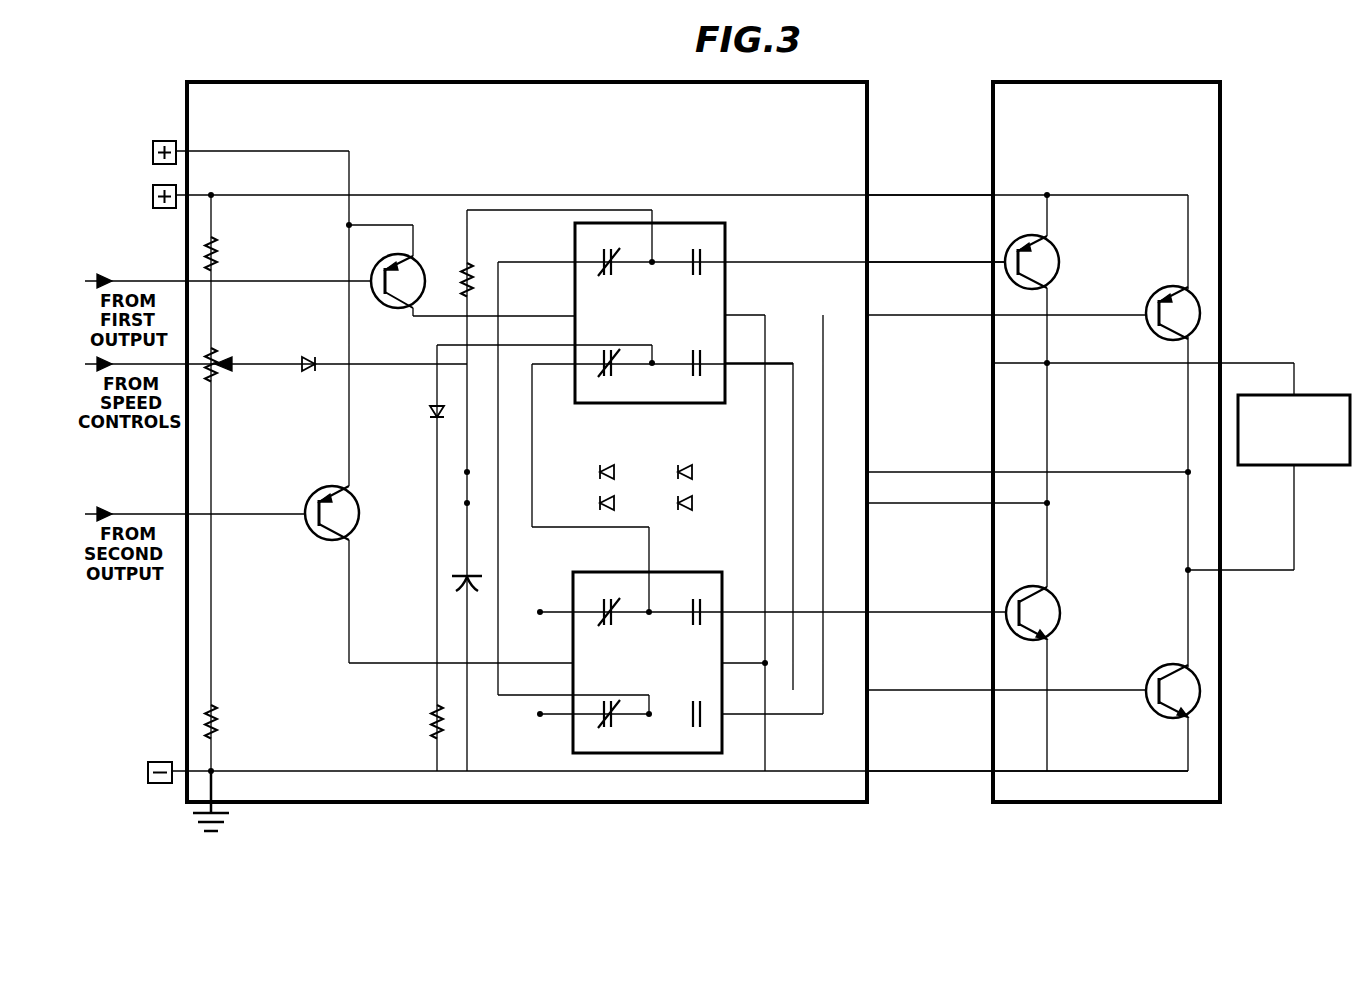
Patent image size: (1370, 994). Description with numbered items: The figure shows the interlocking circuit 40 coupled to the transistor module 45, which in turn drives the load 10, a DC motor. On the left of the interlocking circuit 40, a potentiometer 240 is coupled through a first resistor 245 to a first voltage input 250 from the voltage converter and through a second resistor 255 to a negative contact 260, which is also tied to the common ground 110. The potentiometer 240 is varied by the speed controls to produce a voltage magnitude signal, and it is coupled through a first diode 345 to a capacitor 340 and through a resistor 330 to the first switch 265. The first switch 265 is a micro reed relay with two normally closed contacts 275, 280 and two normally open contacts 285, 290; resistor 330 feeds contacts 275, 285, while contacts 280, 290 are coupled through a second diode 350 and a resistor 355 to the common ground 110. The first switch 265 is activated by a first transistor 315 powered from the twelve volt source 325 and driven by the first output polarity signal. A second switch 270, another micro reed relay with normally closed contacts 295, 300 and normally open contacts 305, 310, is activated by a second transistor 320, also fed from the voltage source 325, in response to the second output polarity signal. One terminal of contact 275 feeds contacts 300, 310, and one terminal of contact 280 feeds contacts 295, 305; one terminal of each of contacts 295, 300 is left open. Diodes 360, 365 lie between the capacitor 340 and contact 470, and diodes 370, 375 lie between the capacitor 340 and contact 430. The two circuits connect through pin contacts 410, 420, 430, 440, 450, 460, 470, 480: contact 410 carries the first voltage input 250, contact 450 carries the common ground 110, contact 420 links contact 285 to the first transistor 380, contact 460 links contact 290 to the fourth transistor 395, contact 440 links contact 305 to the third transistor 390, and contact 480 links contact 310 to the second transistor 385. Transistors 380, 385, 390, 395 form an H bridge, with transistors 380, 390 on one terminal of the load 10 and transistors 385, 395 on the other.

The load 10 is at (1300, 470).
The interlocking circuit 40 is at (846, 806).
The transistor module 45 is at (1212, 806).
The common ground 110 is at (218, 818).
The potentiometer 240 is at (216, 352).
The first resistor 245 is at (217, 248).
The first voltage input 250 is at (163, 210).
The second resistor 255 is at (216, 712).
The negative contact 260 is at (160, 760).
The first switch 265 is at (727, 240).
The second switch 270 is at (724, 730).
The normally closed contact 275 is at (613, 246).
The normally closed contact 280 is at (606, 378).
The normally open contact 285 is at (700, 246).
The normally open contact 290 is at (696, 378).
The normally closed contact 295 is at (600, 604).
The normally closed contact 300 is at (606, 735).
The normally open contact 305 is at (700, 604).
The normally open contact 310 is at (692, 735).
The first transistor 315 is at (405, 256).
The second transistor 320 is at (359, 496).
The +12 VDC voltage source 325 is at (163, 140).
The resistor 330 is at (472, 265).
The capacitor 340 is at (452, 583).
The first diode 345 is at (306, 372).
The second diode 350 is at (430, 414).
The resistor 355 is at (432, 722).
The diode 360 is at (610, 466).
The diode 365 is at (693, 455).
The diode 370 is at (610, 511).
The diode 375 is at (688, 511).
The first transistor of transistor module 380 is at (1058, 245).
The second transistor of transistor module 385 is at (1150, 296).
The third transistor 390 is at (1059, 596).
The fourth transistor 395 is at (1150, 674).
The contact 410 is at (905, 198).
The contact 420 is at (950, 260).
The contact 430 is at (905, 506).
The contact 440 is at (950, 610).
The contact 450 is at (950, 769).
The contact 460 is at (950, 688).
The contact 470 is at (950, 470).
The contact 480 is at (905, 318).